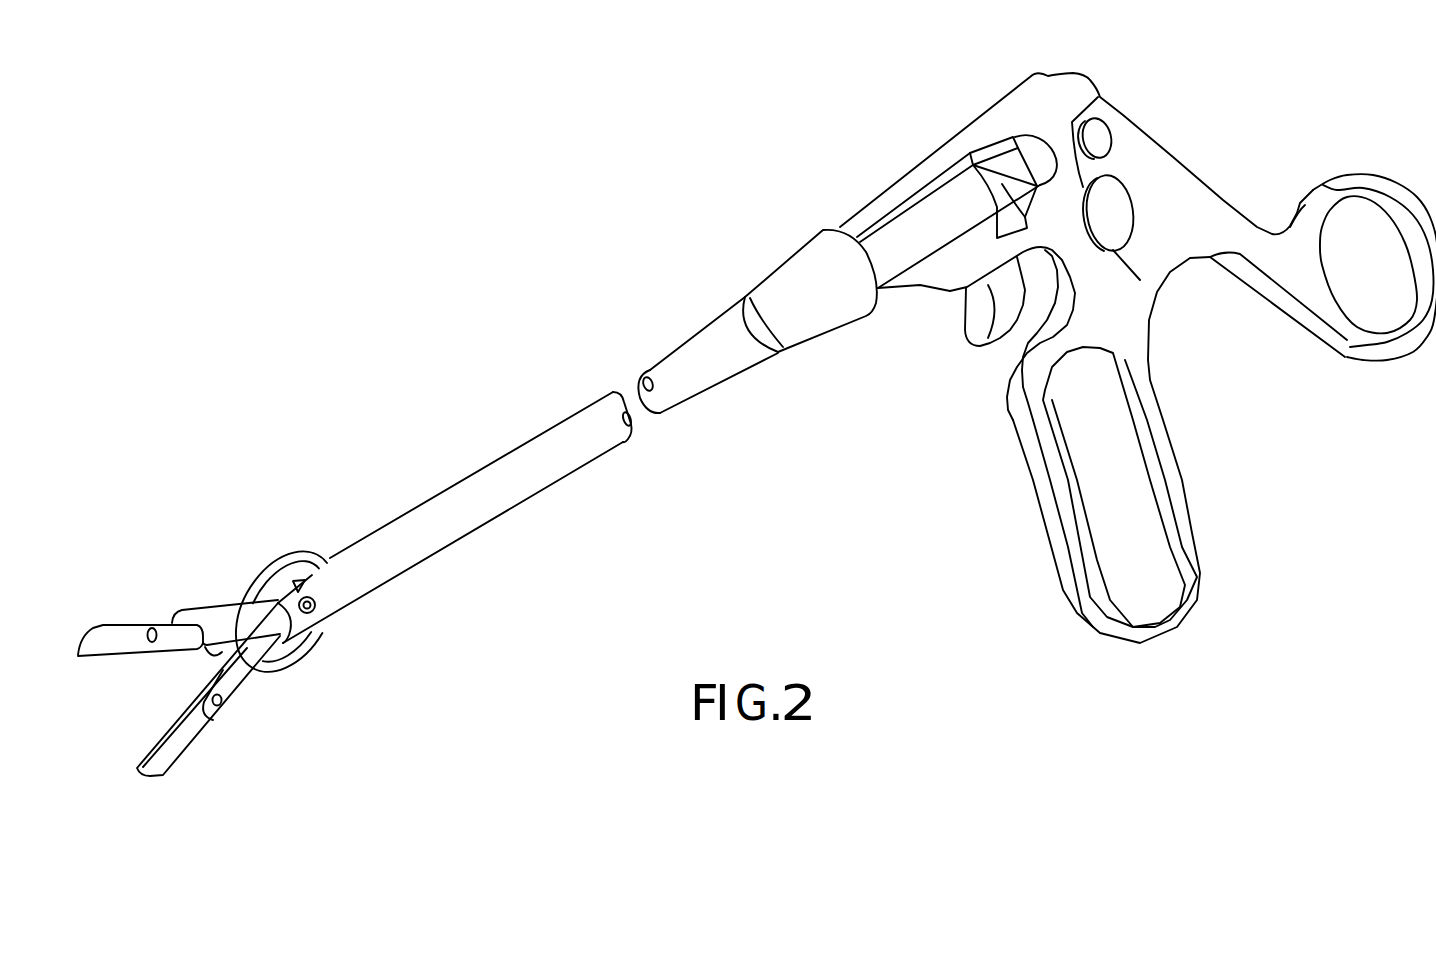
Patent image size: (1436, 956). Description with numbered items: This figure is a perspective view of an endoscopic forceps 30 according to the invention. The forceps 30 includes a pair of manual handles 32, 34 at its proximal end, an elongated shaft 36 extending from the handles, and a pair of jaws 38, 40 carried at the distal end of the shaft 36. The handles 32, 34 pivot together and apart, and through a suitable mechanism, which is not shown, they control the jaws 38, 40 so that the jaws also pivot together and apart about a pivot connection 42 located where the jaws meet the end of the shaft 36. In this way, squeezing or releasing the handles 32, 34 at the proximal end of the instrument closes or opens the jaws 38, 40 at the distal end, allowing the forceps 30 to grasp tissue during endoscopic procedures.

The forceps 30 is at (757, 424).
The manual handle 32 is at (1180, 567).
The manual handle 34 is at (1343, 342).
The elongated shaft 36 is at (552, 459).
The jaw 38 is at (194, 604).
The jaw 40 is at (228, 687).
The pivot connection 42 is at (312, 610).